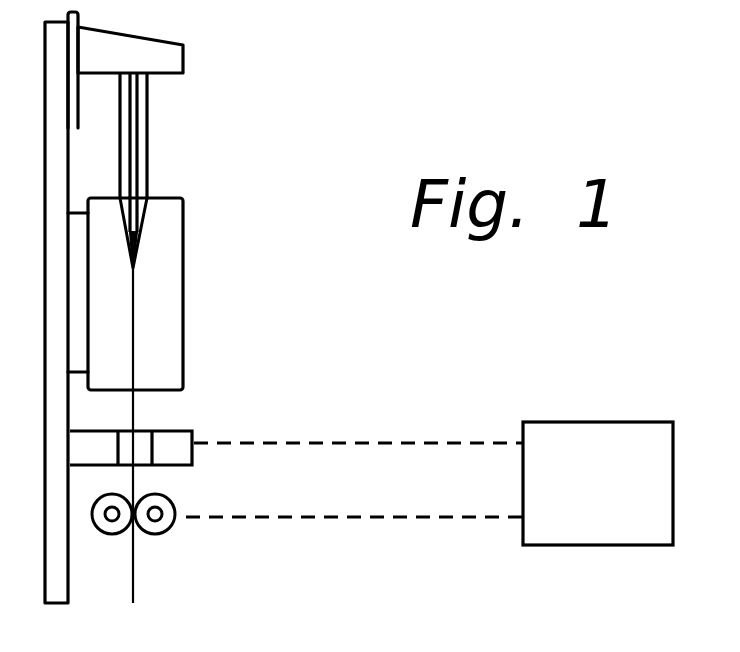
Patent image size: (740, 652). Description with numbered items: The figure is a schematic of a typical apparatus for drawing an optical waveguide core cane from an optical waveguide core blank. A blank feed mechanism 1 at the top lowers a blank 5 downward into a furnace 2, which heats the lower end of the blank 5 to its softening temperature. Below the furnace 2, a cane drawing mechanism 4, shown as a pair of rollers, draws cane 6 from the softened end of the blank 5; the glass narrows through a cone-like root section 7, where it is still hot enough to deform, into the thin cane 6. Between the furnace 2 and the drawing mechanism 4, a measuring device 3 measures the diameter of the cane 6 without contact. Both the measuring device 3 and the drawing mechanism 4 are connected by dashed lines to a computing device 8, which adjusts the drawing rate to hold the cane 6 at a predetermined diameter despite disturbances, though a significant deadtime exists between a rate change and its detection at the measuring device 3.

The blank feed mechanism 1 is at (187, 60).
The furnace 2 is at (185, 308).
The measuring device 3 is at (173, 427).
The cane drawing mechanism 4 is at (172, 527).
The blank 5 is at (149, 132).
The cane 6 is at (135, 587).
The cone-like root section 7 is at (140, 237).
The computing device 8 is at (615, 498).